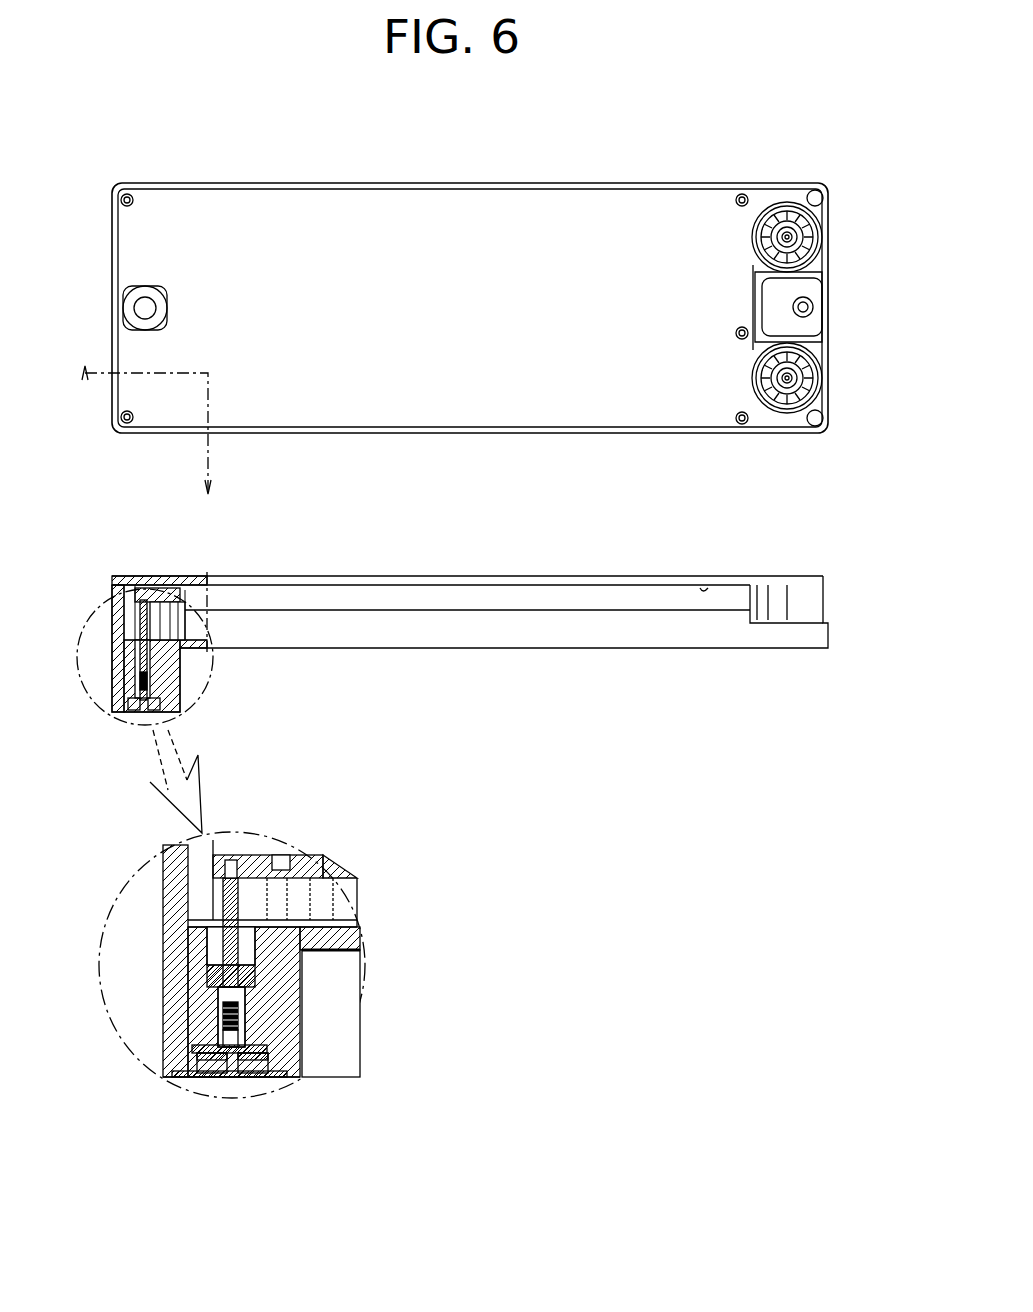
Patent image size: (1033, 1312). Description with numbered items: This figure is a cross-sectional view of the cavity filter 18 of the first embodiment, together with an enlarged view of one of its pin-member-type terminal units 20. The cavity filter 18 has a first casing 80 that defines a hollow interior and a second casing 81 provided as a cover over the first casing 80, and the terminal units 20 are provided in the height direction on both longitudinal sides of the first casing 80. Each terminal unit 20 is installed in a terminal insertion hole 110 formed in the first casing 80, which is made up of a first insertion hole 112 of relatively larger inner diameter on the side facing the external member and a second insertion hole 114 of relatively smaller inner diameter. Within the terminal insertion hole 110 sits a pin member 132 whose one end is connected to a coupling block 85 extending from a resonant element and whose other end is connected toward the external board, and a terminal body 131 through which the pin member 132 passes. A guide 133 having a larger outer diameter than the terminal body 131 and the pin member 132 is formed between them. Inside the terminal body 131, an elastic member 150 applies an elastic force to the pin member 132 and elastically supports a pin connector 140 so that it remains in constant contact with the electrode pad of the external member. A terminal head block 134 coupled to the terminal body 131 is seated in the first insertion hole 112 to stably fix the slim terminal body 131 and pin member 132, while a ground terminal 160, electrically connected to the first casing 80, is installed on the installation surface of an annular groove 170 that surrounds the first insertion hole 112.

The cavity filter 18 is at (213, 119).
The second casing 81 is at (535, 215).
The terminal unit 20 is at (788, 207).
The first casing 80 is at (568, 630).
The coupling block 85 is at (307, 857).
The pin member 132 is at (243, 908).
The guide 133 is at (260, 977).
The terminal body 131 is at (245, 1010).
The terminal insertion hole 110 is at (250, 1020).
The elastic member 150 is at (248, 1010).
The second insertion hole 114 is at (215, 947).
The terminal head block 134 is at (190, 1050).
The annular groove 170 is at (188, 1077).
The ground terminal 160 is at (203, 1080).
The pin connector 140 is at (233, 1076).
The first insertion hole 112 is at (260, 1075).